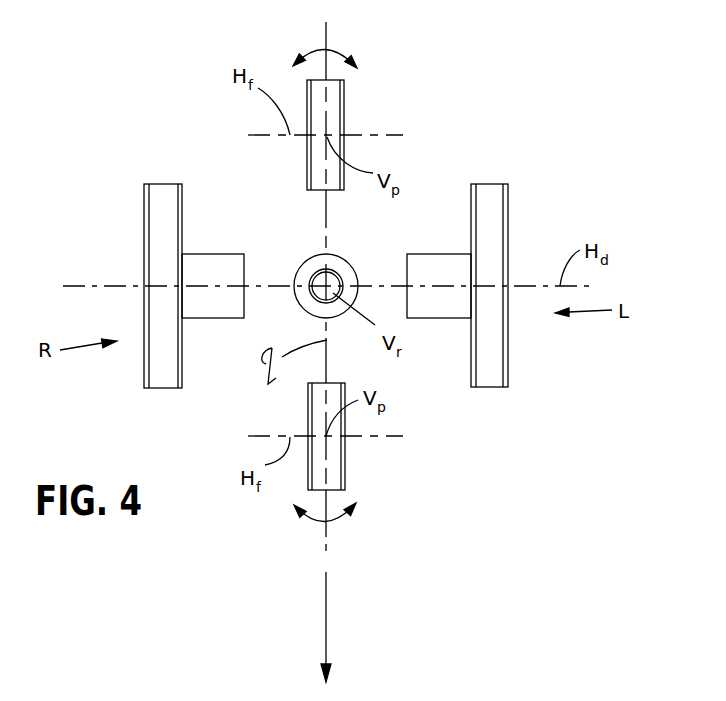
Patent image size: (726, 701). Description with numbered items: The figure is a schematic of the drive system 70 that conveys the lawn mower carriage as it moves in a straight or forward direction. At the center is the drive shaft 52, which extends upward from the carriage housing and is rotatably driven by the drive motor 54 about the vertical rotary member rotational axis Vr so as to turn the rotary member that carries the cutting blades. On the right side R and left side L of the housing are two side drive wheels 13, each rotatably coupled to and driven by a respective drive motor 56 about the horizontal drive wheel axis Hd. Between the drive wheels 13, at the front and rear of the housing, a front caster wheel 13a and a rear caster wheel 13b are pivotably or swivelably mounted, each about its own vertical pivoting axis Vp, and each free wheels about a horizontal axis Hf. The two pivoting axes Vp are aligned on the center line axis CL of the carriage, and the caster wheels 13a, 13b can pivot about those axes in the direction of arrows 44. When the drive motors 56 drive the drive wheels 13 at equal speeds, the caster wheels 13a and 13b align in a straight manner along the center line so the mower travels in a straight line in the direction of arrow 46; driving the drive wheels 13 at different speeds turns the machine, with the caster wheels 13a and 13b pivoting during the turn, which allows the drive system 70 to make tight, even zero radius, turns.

The side drive wheel 13 is at (158, 202).
The front caster wheel 13a is at (347, 465).
The rear caster wheel 13b is at (344, 88).
The pivoting direction arrows 44 is at (337, 53).
The straight travel direction arrow 46 is at (328, 609).
The drive shaft 52 is at (320, 280).
The drive motor 54 is at (342, 255).
The drive motor 56 is at (203, 268).
The drive system 70 is at (578, 370).